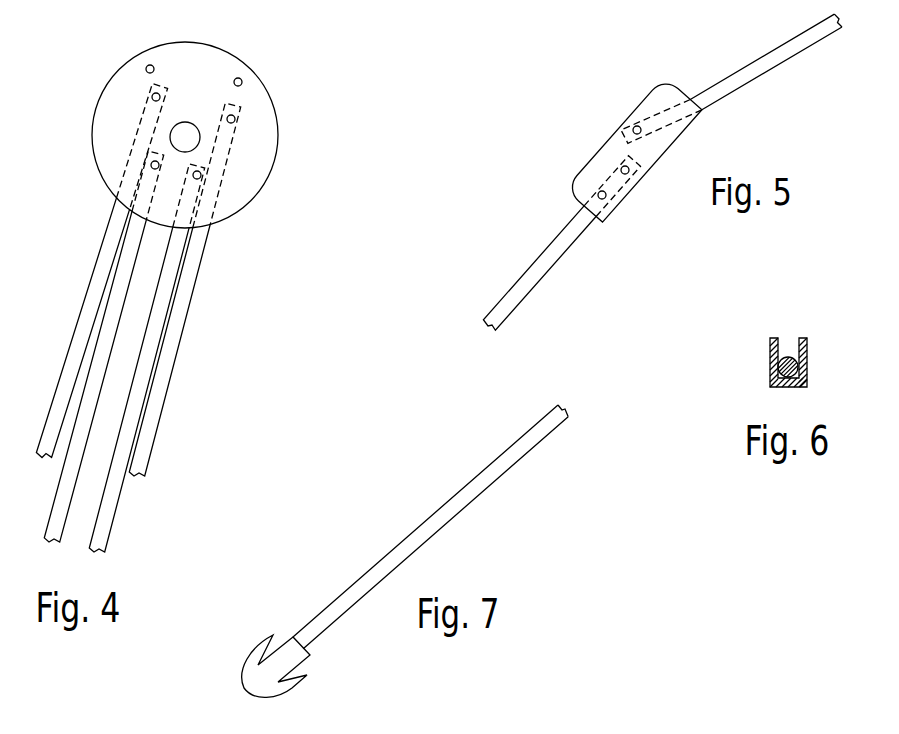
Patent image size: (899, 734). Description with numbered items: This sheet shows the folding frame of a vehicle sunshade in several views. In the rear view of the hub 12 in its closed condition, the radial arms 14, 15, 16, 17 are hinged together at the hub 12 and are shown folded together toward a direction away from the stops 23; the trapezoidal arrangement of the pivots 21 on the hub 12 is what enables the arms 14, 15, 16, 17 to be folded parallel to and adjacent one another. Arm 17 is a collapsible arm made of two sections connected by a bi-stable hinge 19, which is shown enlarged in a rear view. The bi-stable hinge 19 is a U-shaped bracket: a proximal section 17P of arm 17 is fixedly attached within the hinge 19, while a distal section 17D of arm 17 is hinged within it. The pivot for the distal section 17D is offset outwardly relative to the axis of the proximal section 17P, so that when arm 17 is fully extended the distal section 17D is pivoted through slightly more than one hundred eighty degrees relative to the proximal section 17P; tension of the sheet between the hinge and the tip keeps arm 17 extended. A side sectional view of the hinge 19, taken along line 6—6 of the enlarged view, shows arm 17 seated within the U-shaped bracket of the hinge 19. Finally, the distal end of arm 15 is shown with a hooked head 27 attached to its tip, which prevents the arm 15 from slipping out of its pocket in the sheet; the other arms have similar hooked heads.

In FIG. 4, the hub 12 is at (270, 93).
In FIG. 4, the radial arm 14 is at (70, 336).
In FIG. 4, the radial arm 15 is at (55, 498).
In FIG. 7, the radial arm 15 is at (492, 483).
In FIG. 4, the radial arm 16 is at (115, 515).
In FIG. 4, the collapsible arm 17 is at (174, 364).
In FIG. 5, the collapsible arm 17 is at (658, 172).
In FIG. 6, the collapsible arm 17 is at (789, 357).
In FIG. 5, the distal section of arm 17 17D is at (727, 73).
In FIG. 5, the proximal section of arm 17 17P is at (557, 233).
In FIG. 5, the bi-stable hinge 19 is at (648, 94).
In FIG. 6, the bi-stable hinge 19 is at (770, 358).
In FIG. 4, the pivots 21 is at (235, 123).
In FIG. 4, the stops 23 is at (147, 65).
In FIG. 7, the hooked head 27 is at (260, 648).
In FIG. 5, the section line 6— 6 is at (585, 155).